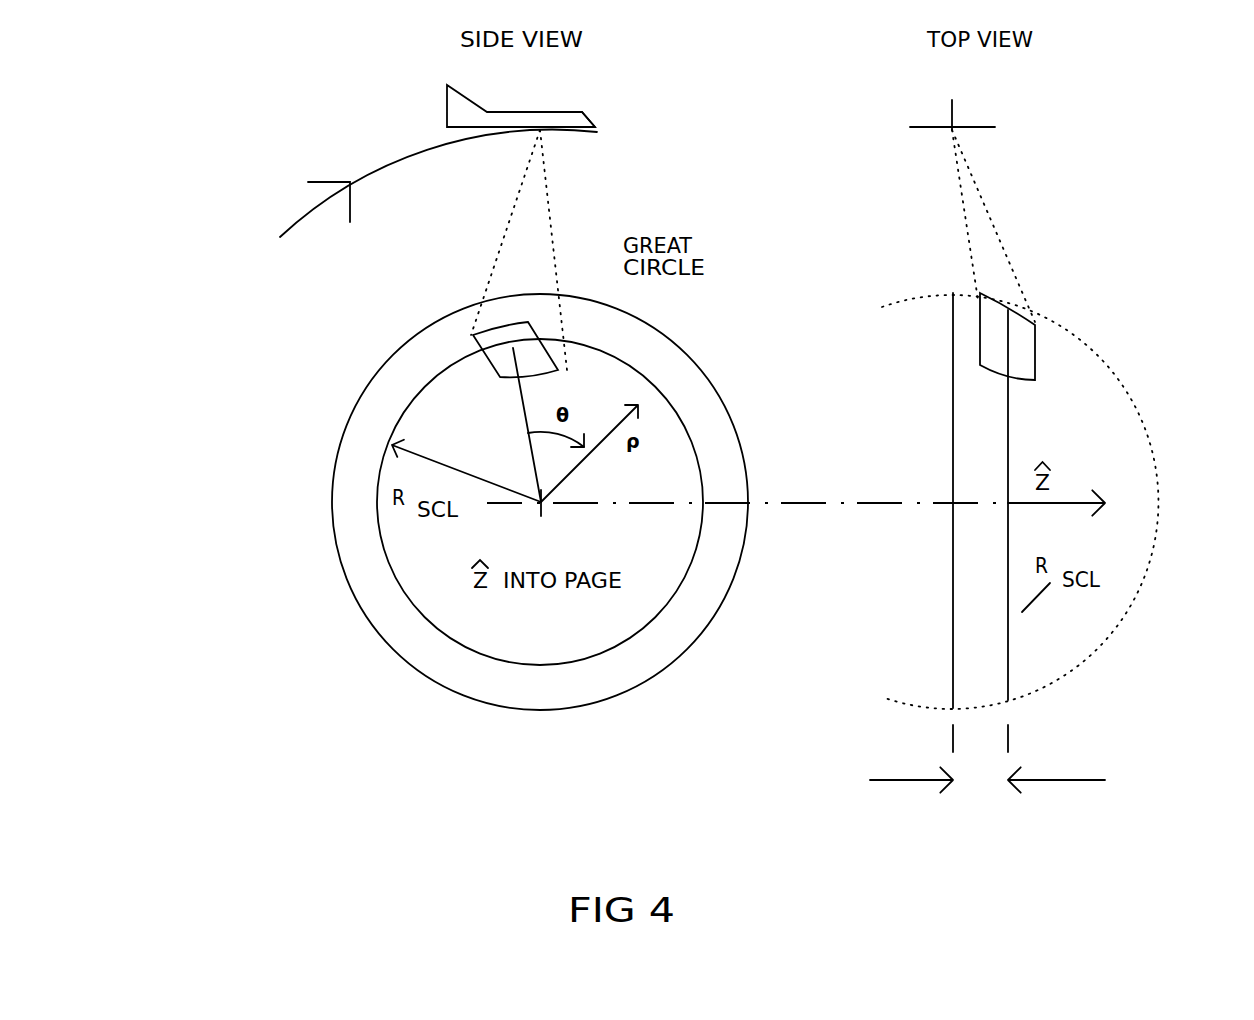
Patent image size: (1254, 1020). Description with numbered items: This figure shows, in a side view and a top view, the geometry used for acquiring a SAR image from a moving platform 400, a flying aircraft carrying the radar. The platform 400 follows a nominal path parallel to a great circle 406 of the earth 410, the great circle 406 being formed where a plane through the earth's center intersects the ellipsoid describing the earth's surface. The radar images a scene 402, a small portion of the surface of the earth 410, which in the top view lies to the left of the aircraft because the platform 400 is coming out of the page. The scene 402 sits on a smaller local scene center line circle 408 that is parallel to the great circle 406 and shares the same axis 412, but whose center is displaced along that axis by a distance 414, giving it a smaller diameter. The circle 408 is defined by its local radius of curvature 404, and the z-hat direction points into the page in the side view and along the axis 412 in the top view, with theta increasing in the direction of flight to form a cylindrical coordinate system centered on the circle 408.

The moving platform 400 is at (813, 225).
The scene 402 is at (519, 325).
The local radius of curvature 404 is at (480, 473).
The great circle 406 is at (938, 335).
The local scene center line circle 408 is at (665, 392).
The earth 410 is at (912, 293).
The axis 412 is at (747, 487).
The distance 414 is at (987, 783).